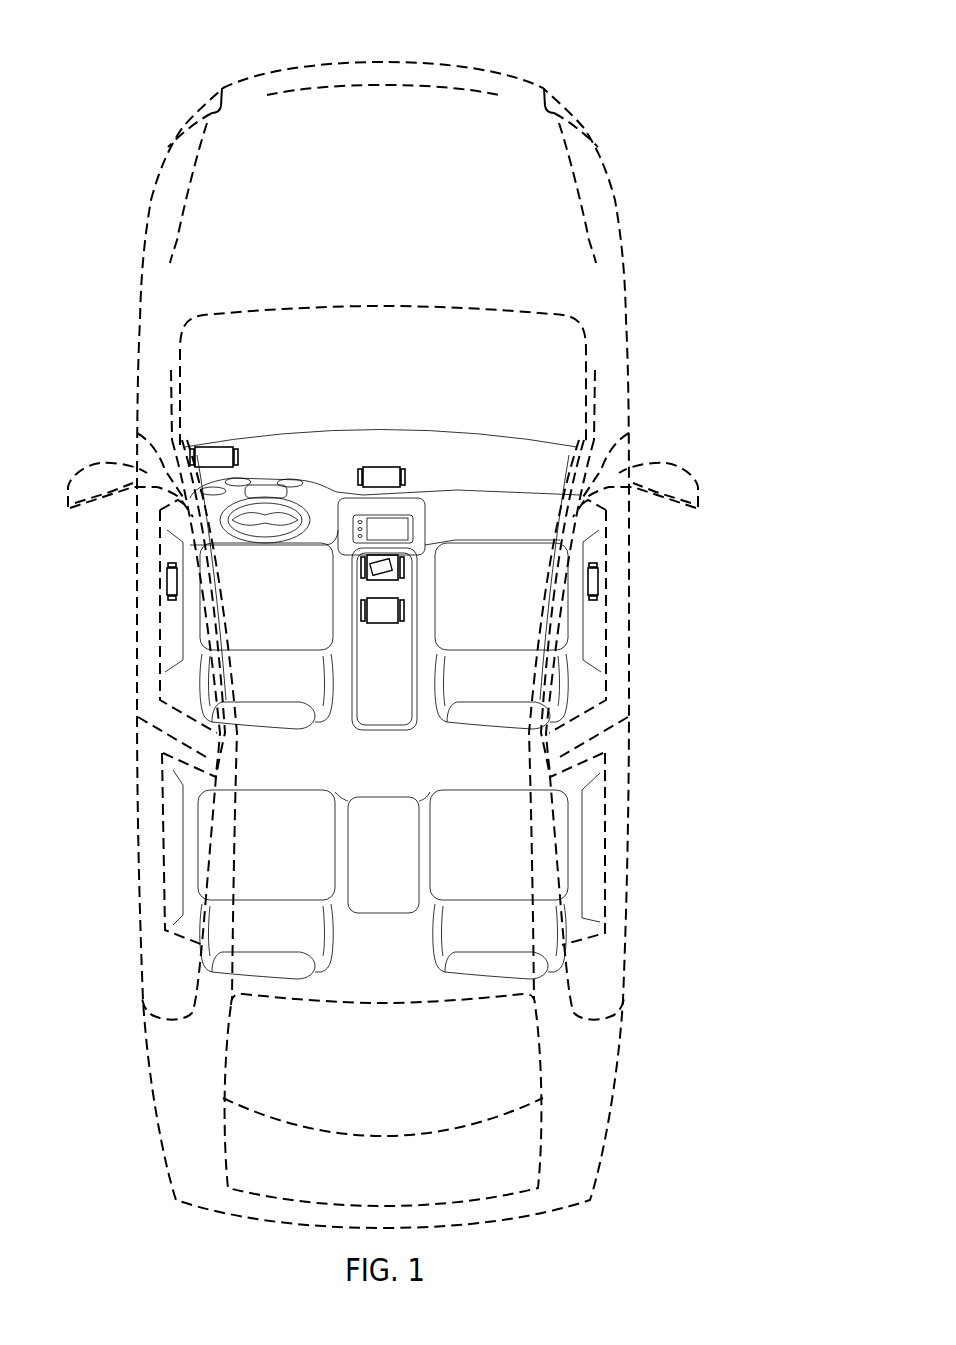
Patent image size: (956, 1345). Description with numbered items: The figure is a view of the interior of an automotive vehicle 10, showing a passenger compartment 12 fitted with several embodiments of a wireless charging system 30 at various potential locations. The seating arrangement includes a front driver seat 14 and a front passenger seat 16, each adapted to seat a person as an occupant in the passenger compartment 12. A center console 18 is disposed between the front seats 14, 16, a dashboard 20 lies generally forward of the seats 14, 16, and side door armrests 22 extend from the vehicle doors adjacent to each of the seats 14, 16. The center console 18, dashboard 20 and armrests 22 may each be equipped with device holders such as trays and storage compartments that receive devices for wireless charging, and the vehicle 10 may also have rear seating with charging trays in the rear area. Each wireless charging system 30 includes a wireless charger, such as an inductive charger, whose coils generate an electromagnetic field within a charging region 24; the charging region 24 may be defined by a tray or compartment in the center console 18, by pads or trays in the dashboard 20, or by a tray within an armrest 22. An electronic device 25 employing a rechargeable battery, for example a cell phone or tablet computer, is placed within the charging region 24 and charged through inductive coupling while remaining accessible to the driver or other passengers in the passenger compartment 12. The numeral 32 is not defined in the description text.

The vehicle 10 is at (541, 86).
The passenger compartment 12 is at (488, 508).
The front driver seat 14 is at (280, 633).
The front passenger seat 16 is at (512, 633).
The center console 18 is at (373, 708).
The dashboard 20 is at (535, 453).
The side door armrest 22 is at (170, 652).
The charging region 24 is at (228, 447).
The electronic device 25 is at (343, 562).
The wireless charging system 30 is at (377, 567).
The connector 32 is at (240, 448).